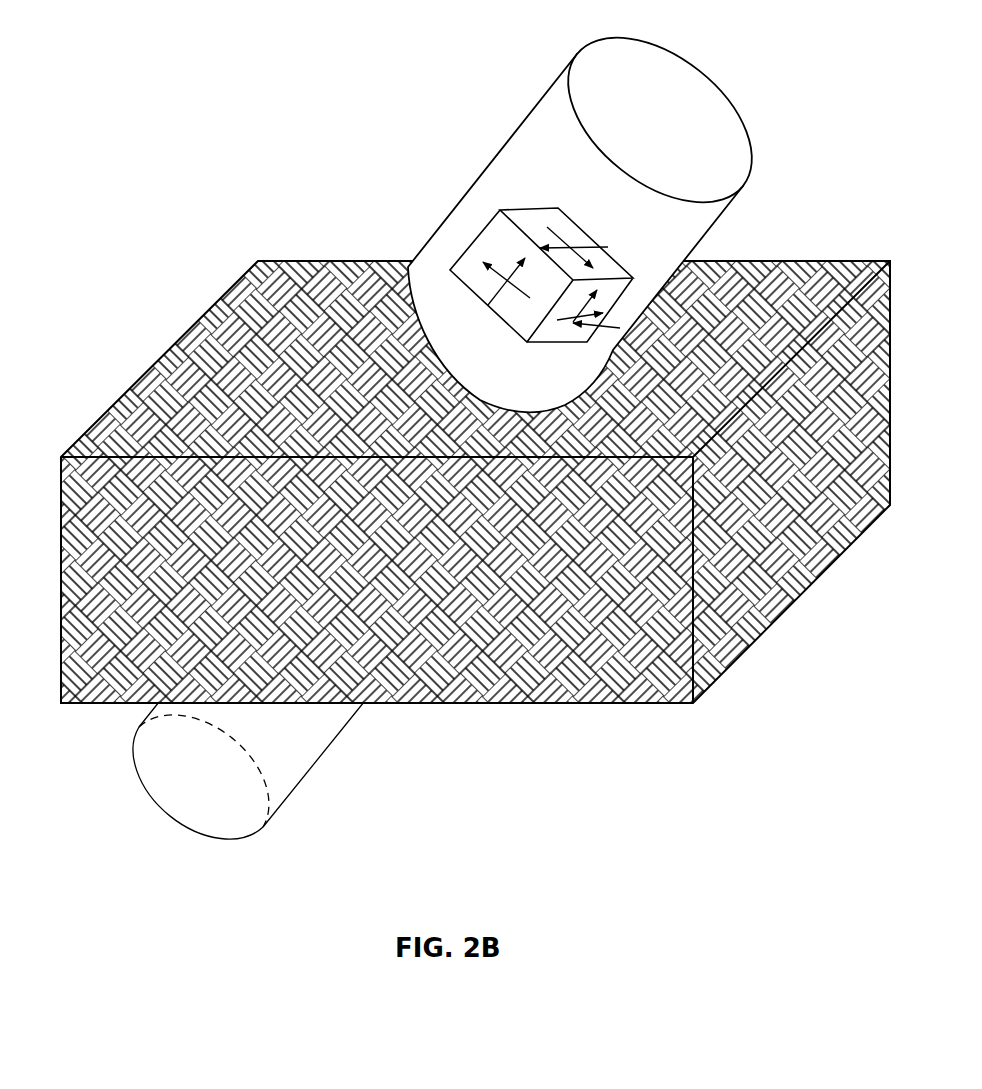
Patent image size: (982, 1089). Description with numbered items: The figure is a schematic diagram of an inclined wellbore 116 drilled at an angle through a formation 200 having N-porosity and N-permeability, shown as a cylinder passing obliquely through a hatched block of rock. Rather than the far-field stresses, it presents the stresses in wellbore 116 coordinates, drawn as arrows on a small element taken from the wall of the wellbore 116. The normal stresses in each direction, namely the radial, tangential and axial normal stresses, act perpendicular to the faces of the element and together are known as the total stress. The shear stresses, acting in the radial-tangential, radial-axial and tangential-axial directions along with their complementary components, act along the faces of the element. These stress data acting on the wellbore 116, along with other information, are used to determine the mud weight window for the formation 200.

The wellbore 116 is at (453, 213).
The formation 200 is at (105, 413).